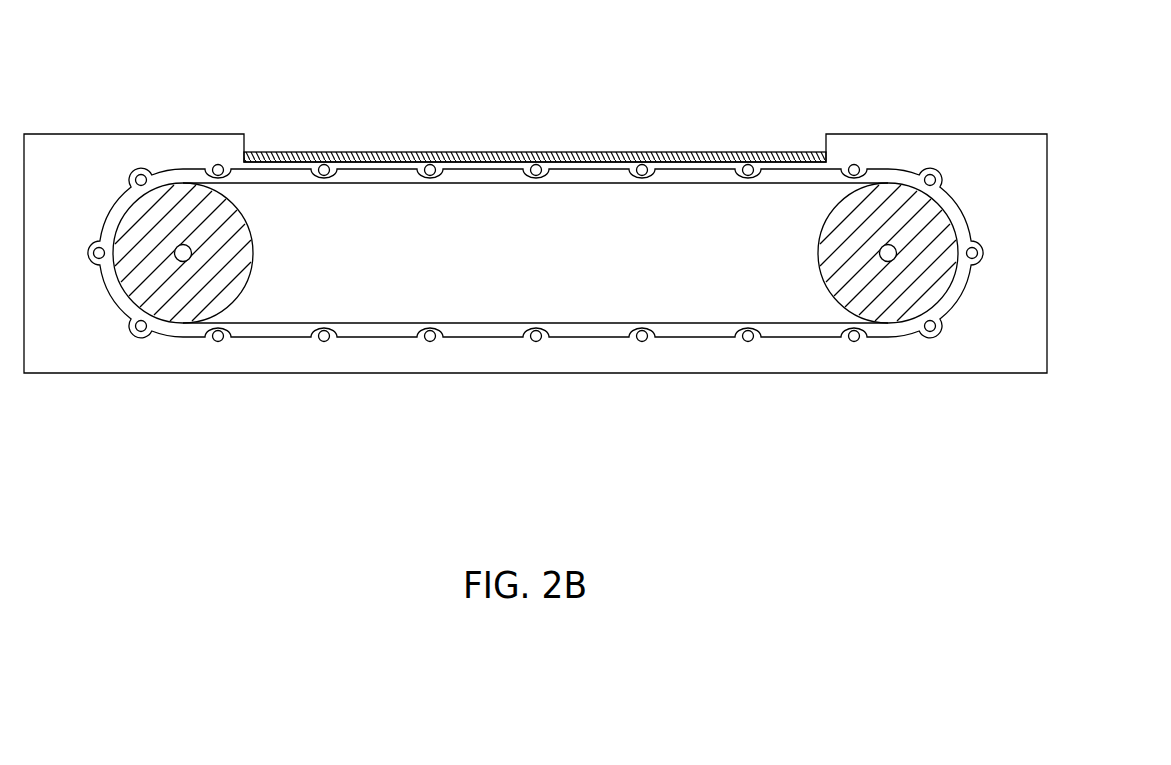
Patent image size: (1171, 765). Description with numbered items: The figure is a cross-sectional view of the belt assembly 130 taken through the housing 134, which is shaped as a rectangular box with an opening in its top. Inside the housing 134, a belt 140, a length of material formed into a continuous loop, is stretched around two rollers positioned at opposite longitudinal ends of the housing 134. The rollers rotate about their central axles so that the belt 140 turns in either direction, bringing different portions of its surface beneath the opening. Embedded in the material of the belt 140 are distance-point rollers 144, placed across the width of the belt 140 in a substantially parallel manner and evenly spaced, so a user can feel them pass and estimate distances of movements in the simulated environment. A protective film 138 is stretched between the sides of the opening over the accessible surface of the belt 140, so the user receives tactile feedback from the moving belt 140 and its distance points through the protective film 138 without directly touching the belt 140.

The belt assembly 130 is at (573, 270).
The housing 134 is at (1048, 178).
The protective film 138 is at (790, 152).
The belt 140 is at (272, 169).
The rollers 144 is at (430, 165).